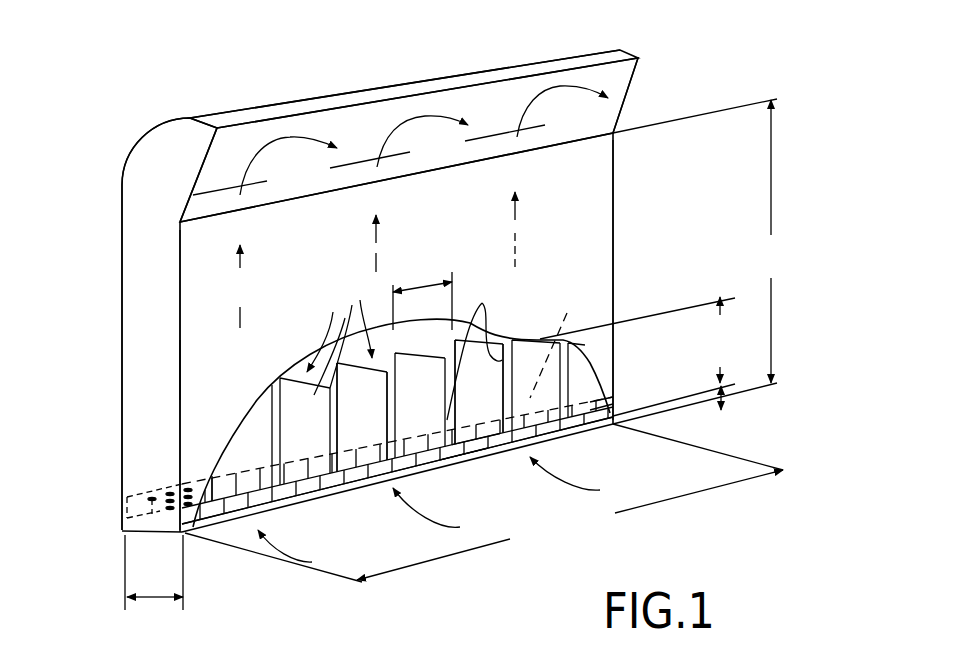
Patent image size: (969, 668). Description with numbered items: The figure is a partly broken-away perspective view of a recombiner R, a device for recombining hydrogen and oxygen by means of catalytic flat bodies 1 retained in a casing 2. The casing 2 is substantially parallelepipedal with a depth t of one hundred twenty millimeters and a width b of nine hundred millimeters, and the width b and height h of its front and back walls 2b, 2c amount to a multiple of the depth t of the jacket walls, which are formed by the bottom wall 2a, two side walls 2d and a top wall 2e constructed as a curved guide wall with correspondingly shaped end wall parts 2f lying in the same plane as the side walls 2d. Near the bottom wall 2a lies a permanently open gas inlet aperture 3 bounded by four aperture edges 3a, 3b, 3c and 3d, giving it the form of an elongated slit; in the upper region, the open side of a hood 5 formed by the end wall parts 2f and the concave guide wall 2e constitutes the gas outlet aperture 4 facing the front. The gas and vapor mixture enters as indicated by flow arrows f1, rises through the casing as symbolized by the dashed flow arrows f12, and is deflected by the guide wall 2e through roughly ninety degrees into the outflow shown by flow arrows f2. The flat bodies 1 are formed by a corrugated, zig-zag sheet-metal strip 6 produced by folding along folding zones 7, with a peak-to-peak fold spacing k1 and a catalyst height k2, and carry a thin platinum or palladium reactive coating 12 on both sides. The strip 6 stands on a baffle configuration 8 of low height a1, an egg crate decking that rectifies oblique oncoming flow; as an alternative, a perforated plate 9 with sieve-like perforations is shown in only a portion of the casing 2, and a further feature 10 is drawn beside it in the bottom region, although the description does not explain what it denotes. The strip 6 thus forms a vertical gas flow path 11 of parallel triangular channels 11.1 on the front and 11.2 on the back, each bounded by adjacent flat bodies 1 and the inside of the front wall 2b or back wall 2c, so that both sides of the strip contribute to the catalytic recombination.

The recombiner R is at (265, 100).
The catalytic flat bodies 1 is at (535, 345).
The casing 2 is at (620, 247).
The bottom wall 2a is at (167, 532).
The front wall 2b is at (203, 362).
The back wall 2c is at (122, 267).
The side walls 2d is at (150, 313).
The top wall 2e is at (352, 97).
The end wall parts 2f is at (163, 170).
The gas inlet aperture 3 is at (598, 423).
The aperture edge 3a is at (233, 523).
The aperture edge 3b is at (147, 527).
The aperture edge 3c is at (567, 318).
The aperture edge 3d is at (608, 397).
The gas outlet aperture 4 is at (485, 103).
The hood 5 is at (468, 72).
The sheet-metal strip 6 is at (320, 482).
The folding zones 7 is at (490, 296).
The baffle configuration 8 is at (476, 456).
The perforated plate 9 is at (160, 490).
The fastening hole 10 is at (152, 498).
The gas flow path 11 is at (347, 490).
The gas flow channels 11.1 is at (370, 345).
The gas flow channels 11.2 is at (443, 315).
The reactive coating 12 is at (339, 346).
The flow arrows f1 is at (286, 549).
The flow arrows f2 is at (267, 148).
The flow arrows f12 is at (242, 284).
The fold spacing k1 is at (422, 282).
The catalyst height k2 is at (637, 340).
The height of baffle configuration a1 is at (724, 393).
The height h is at (719, 261).
The width b is at (484, 503).
The depth t is at (148, 600).